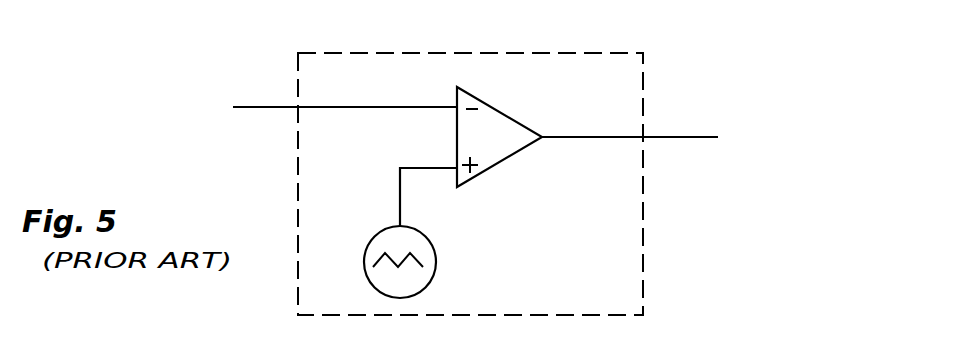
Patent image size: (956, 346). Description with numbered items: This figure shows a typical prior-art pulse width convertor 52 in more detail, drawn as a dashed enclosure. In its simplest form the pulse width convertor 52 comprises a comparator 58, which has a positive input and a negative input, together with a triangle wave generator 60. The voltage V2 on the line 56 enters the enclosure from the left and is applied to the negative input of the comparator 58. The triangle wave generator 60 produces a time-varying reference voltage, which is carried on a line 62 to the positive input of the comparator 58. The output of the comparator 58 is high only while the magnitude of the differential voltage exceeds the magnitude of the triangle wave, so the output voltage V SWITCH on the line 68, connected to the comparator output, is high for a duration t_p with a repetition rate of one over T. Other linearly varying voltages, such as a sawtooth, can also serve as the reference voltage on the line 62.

The pulse width convertor 52 is at (538, 52).
The line 56 is at (258, 104).
The comparator 58 is at (518, 117).
The triangle wave generator 60 is at (437, 262).
The line 62 is at (400, 203).
The line 68 is at (674, 139).